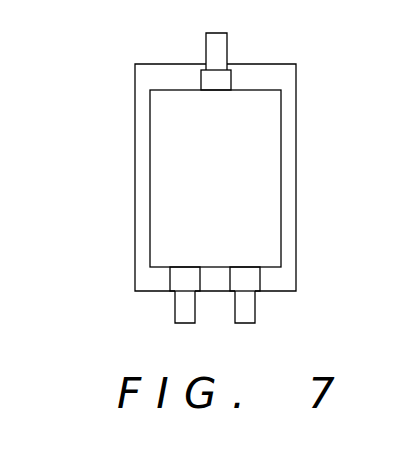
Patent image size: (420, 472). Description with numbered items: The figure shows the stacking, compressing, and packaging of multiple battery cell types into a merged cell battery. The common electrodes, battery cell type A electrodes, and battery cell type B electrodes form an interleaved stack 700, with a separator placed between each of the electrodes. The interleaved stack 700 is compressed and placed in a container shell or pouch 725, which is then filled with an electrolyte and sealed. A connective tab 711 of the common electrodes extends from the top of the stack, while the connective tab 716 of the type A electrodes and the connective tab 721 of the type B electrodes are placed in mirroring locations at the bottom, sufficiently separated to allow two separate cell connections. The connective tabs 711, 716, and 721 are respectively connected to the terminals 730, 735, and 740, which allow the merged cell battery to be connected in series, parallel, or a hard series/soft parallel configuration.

The interleaved stack 700 is at (260, 172).
The connective tab 711 is at (231, 80).
The connective tab 716 is at (170, 278).
The connective tab 721 is at (260, 275).
The container shell or pouch 725 is at (134, 141).
The terminal 730 is at (206, 43).
The terminal 735 is at (175, 309).
The terminal 740 is at (256, 309).